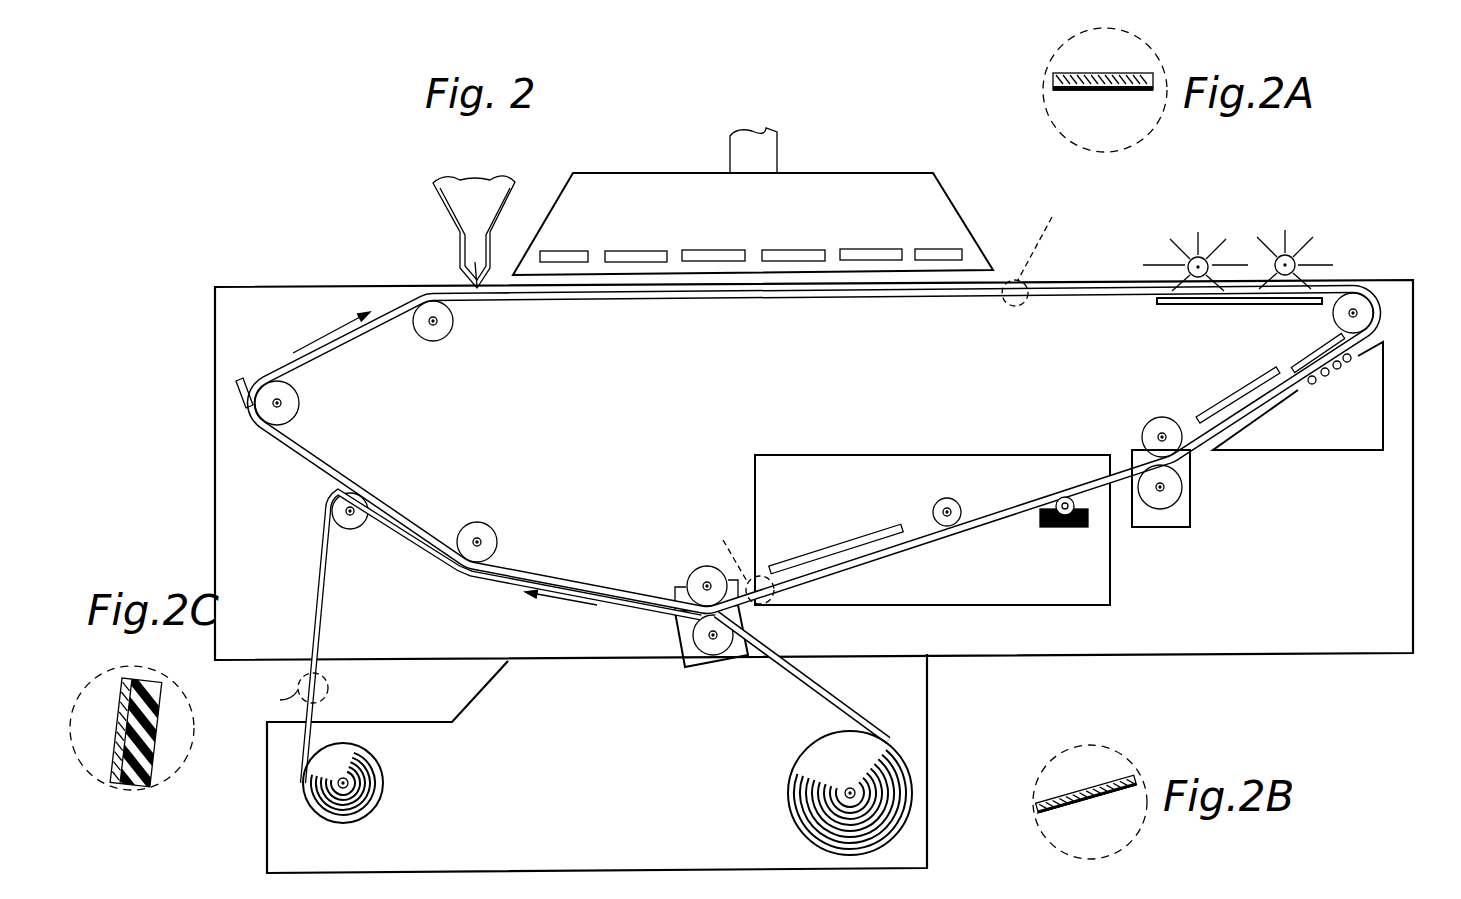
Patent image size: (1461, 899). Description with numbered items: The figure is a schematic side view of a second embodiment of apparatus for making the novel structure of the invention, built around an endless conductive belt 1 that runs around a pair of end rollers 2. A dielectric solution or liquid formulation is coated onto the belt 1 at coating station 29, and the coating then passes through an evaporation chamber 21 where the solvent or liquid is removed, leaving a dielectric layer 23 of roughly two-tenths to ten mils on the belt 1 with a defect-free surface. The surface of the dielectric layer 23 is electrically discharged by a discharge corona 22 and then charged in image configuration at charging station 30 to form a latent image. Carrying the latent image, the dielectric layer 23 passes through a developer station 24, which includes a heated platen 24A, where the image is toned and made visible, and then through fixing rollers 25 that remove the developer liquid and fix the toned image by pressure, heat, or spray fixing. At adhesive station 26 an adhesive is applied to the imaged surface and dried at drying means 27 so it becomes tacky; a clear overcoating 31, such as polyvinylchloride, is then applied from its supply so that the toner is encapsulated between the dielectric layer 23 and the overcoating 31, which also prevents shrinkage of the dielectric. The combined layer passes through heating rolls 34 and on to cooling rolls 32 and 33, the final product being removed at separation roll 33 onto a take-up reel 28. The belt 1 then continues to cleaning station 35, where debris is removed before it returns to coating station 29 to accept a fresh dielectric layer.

In FIG. 2, the endless conductive belt 1 is at (392, 312).
In FIG. 2A, the endless conductive belt 1 is at (1105, 92).
In FIG. 2B, the endless conductive belt 1 is at (1093, 782).
In FIG. 2, the belt rollers 2 is at (445, 333).
In FIG. 2, the evaporation chamber 21 is at (815, 190).
In FIG. 2, the discharge corona 22 is at (1193, 255).
In FIG. 2, the dielectric layer 23 is at (1038, 288).
In FIG. 2A, the dielectric layer 23 is at (1092, 73).
In FIG. 2B, the dielectric layer 23 is at (1080, 808).
In FIG. 2C, the dielectric layer 23 is at (114, 688).
In FIG. 2, the developer station 24 is at (1365, 363).
In FIG. 2, the heated platen 24A is at (1232, 393).
In FIG. 2, the fixing rollers 25 is at (1158, 418).
In FIG. 2, the adhesive station 26 is at (1078, 528).
In FIG. 2, the drying means 27 is at (845, 540).
In FIG. 2, the carrier web supply reel 28 is at (325, 636).
In FIG. 2, the coating station 29 is at (458, 252).
In FIG. 2, the charging station 30 is at (1292, 253).
In FIG. 2, the clear overcoating 31 is at (825, 697).
In FIG. 2C, the clear overcoating 31 is at (143, 680).
In FIG. 2, the cooling roll 32 is at (492, 552).
In FIG. 2, the separation roll 33 is at (358, 525).
In FIG. 2, the heating rolls 34 is at (700, 570).
In FIG. 2, the cleaning station 35 is at (300, 403).